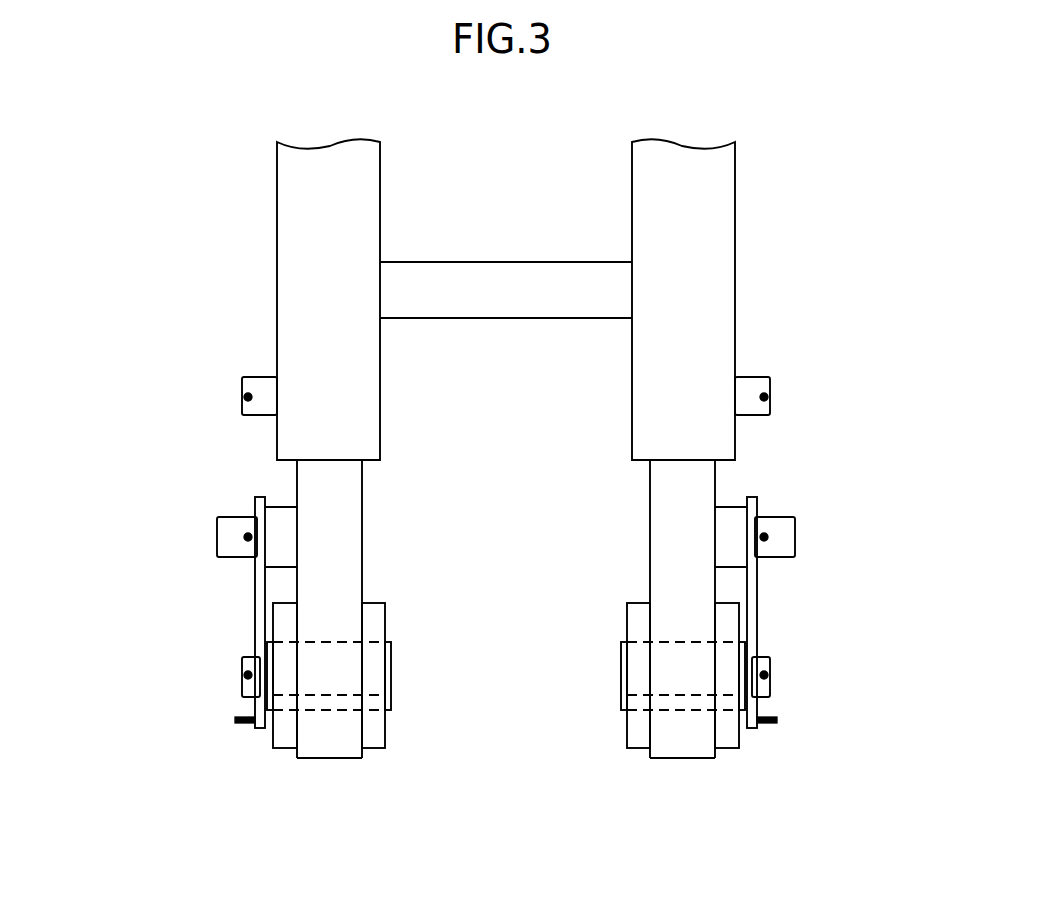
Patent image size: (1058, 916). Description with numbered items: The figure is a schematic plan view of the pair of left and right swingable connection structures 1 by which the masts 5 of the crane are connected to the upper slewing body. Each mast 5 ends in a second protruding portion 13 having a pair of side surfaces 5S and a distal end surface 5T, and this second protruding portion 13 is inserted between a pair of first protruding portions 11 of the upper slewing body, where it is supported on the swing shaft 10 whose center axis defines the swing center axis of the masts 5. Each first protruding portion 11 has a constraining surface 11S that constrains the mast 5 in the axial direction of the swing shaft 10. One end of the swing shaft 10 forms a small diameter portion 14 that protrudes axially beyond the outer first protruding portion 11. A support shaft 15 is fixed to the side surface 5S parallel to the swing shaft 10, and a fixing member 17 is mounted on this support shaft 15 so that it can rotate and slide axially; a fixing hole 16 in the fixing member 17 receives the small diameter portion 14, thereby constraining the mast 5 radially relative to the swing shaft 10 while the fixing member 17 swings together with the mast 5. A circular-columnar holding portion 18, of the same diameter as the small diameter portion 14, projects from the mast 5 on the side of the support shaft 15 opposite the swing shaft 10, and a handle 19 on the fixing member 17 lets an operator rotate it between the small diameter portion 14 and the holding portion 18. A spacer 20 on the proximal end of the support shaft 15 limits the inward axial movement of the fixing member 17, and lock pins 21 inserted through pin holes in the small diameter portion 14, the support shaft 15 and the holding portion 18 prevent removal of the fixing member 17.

The swingable connection structure 1 is at (139, 312).
The mast 5 is at (263, 249).
The side surface 5S is at (297, 478).
The distal end surface 5T is at (308, 758).
The swing shaft 10 is at (233, 708).
The first protruding portion 11 is at (282, 748).
The constraining surface 11S is at (300, 727).
The second protruding portion 13 is at (325, 758).
The small diameter portion 14 is at (242, 684).
The support shaft 15 is at (205, 518).
The fixing hole 16 is at (237, 660).
The fixing member 17 is at (244, 601).
The holding portion 18 is at (230, 381).
The handle 19 is at (238, 724).
The spacer 20 is at (283, 505).
The lock pin 21 is at (246, 397).